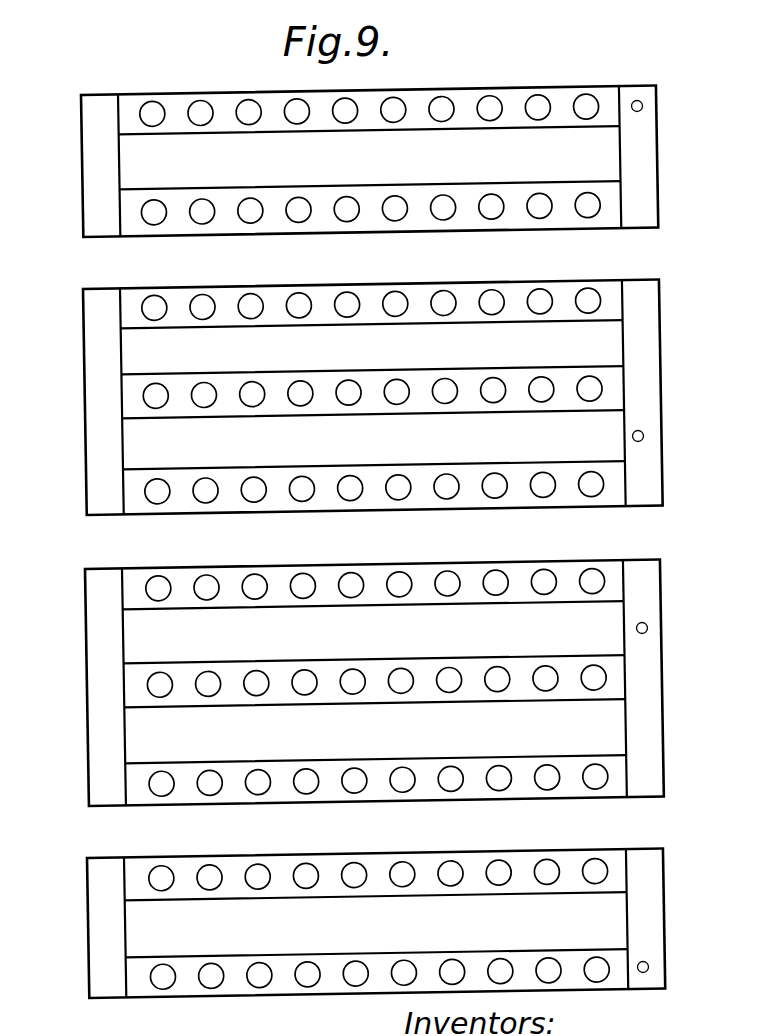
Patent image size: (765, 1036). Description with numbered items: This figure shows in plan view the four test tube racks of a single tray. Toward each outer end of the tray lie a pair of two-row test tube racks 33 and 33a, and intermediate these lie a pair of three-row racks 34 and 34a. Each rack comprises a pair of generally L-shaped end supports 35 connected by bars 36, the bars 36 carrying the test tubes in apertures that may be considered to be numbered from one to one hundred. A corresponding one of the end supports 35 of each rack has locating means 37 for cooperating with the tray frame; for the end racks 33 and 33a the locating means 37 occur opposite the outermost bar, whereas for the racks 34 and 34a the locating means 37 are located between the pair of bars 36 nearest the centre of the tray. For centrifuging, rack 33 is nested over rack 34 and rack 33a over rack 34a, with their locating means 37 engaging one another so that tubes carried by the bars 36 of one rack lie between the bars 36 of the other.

The two-row test tube rack 33 is at (641, 990).
The two-row test tube rack 33a is at (630, 229).
The three-row rack 34 is at (628, 507).
The three-row rack 34a is at (637, 798).
The end support 35 is at (83, 161).
The bar 36 is at (227, 132).
The locating means 37 is at (643, 104).